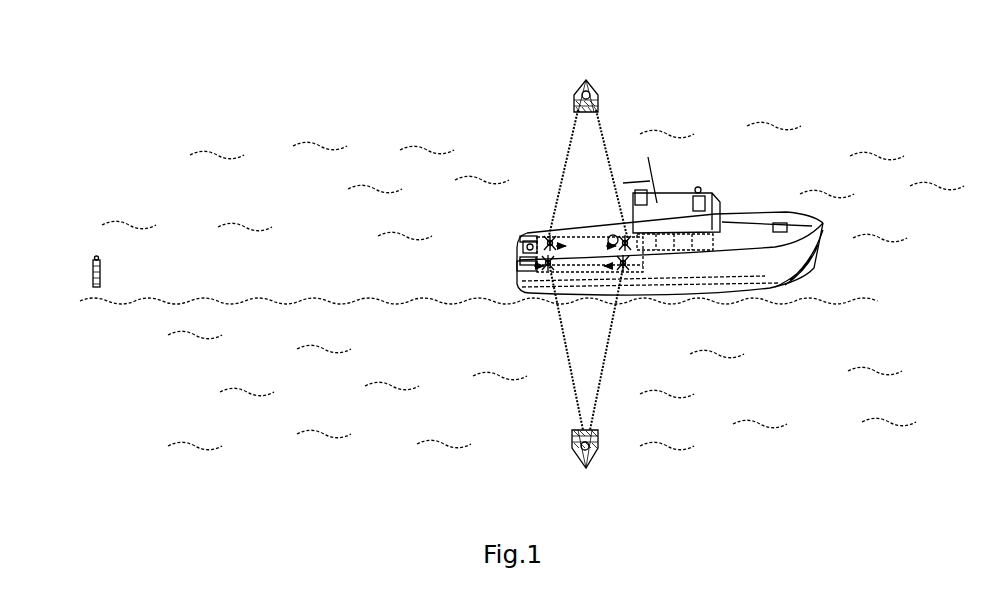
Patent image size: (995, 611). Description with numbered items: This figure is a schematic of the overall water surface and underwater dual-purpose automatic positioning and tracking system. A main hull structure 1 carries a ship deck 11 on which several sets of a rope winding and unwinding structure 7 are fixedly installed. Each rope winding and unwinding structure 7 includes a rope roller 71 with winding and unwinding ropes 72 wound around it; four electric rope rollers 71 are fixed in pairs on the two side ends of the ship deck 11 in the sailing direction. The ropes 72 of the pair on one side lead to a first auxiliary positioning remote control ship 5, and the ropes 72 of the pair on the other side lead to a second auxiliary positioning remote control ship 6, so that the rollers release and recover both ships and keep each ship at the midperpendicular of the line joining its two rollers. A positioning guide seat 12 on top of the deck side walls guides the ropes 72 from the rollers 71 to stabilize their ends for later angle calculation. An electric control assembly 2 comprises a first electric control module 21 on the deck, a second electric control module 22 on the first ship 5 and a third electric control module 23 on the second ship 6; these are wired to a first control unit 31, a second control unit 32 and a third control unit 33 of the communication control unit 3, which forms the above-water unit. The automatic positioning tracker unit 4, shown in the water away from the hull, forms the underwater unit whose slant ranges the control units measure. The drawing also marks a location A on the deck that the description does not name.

The main hull structure 1 is at (752, 215).
The electric control assembly 2 is at (516, 266).
The communication control unit 3 is at (522, 236).
The automatic positioning tracker unit 4 is at (91, 259).
The first auxiliary positioning remote control ship 5 is at (587, 84).
The second auxiliary positioning remote control ship 6 is at (576, 457).
The rope winding and unwinding structure 7 is at (543, 293).
The ship deck 11 is at (582, 252).
The positioning guide seat 12 is at (548, 236).
The first electric control module 21 is at (521, 261).
The second electric control module 22 is at (600, 96).
The third electric control module 23 is at (575, 455).
The first control unit 31 is at (523, 247).
The second control unit 32 is at (573, 93).
The third control unit 33 is at (572, 441).
The rope roller 71 is at (565, 294).
The winding and unwinding ropes 72 is at (559, 342).
The acoustic transducer A is at (620, 236).